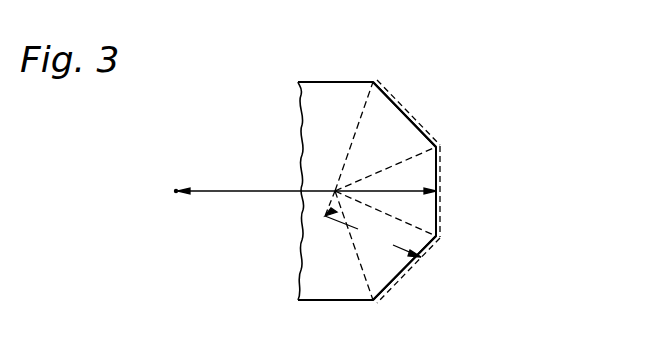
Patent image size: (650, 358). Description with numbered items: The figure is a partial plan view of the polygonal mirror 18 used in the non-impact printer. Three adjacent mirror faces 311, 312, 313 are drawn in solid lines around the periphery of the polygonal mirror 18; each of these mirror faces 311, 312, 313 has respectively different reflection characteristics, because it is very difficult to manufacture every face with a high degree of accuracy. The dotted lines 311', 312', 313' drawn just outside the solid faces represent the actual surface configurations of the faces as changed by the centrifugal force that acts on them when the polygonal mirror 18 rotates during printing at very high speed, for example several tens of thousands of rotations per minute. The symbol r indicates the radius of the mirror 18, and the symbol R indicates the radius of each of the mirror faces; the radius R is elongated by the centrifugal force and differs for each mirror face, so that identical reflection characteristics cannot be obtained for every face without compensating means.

The polygonal mirror 18 is at (337, 82).
The mirror face 311 is at (404, 94).
The actual surface configuration of first mirror face 311' is at (424, 112).
The mirror face 312 is at (463, 208).
The actual surface configuration of second mirror face 312' is at (476, 191).
The mirror face 313 is at (402, 293).
The actual surface configuration of third mirror face 313' is at (412, 287).